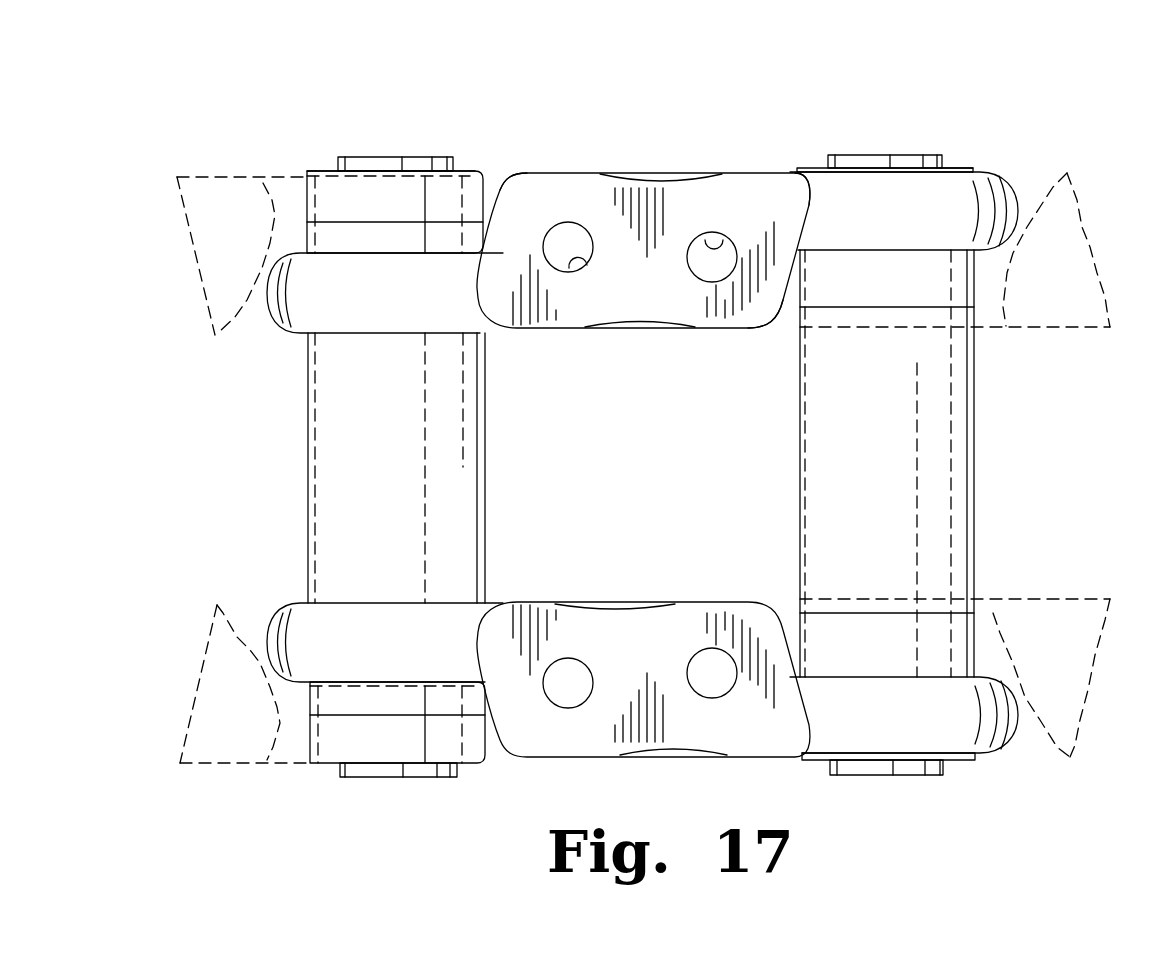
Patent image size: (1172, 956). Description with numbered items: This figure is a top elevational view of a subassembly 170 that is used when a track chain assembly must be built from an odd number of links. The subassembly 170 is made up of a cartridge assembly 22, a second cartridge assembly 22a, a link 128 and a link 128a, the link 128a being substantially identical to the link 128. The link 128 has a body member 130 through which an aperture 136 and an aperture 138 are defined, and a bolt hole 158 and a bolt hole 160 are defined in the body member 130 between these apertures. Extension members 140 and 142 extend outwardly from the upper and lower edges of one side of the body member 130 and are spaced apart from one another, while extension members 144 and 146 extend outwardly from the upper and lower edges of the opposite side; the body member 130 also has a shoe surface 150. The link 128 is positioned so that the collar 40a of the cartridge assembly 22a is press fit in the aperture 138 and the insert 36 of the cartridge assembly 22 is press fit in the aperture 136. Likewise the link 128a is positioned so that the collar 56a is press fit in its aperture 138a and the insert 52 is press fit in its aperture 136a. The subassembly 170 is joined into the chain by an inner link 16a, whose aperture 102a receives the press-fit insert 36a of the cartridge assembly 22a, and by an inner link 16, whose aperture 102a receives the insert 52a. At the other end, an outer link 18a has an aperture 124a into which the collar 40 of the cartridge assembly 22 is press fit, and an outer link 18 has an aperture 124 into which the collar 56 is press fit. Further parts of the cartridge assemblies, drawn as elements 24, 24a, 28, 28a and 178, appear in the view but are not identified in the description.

The inner link 16 is at (1000, 598).
The inner link 16a is at (978, 345).
The outer link 18 is at (349, 761).
The outer link 18a is at (354, 163).
The cartridge assembly 22 is at (333, 458).
The cartridge assembly 22a is at (880, 438).
The tube 24 is at (315, 445).
The tube 24a is at (977, 464).
The cap 28 is at (388, 160).
The cap 28a is at (905, 158).
The insert 36 is at (310, 225).
The insert 36a is at (965, 289).
The collar 40 is at (316, 181).
The collar 40a is at (965, 168).
The insert 52 is at (320, 697).
The insert 52a is at (960, 640).
The collar 56 is at (322, 745).
The collar 56a is at (963, 762).
The aperture 102a is at (838, 330).
The aperture 124 is at (289, 764).
The aperture 124a is at (417, 152).
The link 128 is at (1022, 183).
The link 128a is at (607, 587).
The body member 130 is at (643, 228).
The aperture 136 is at (373, 334).
The aperture 136a is at (373, 602).
The aperture 138 is at (949, 204).
The aperture 138a is at (868, 676).
The extension member 140 is at (767, 326).
The extension member 142 is at (708, 335).
The extension member 144 is at (520, 180).
The extension member 146 is at (577, 170).
The shoe surface 150 is at (767, 187).
The bolt hole 158 is at (573, 268).
The bolt hole 160 is at (716, 232).
The subassembly 170 is at (945, 178).
The plate 178 is at (812, 166).